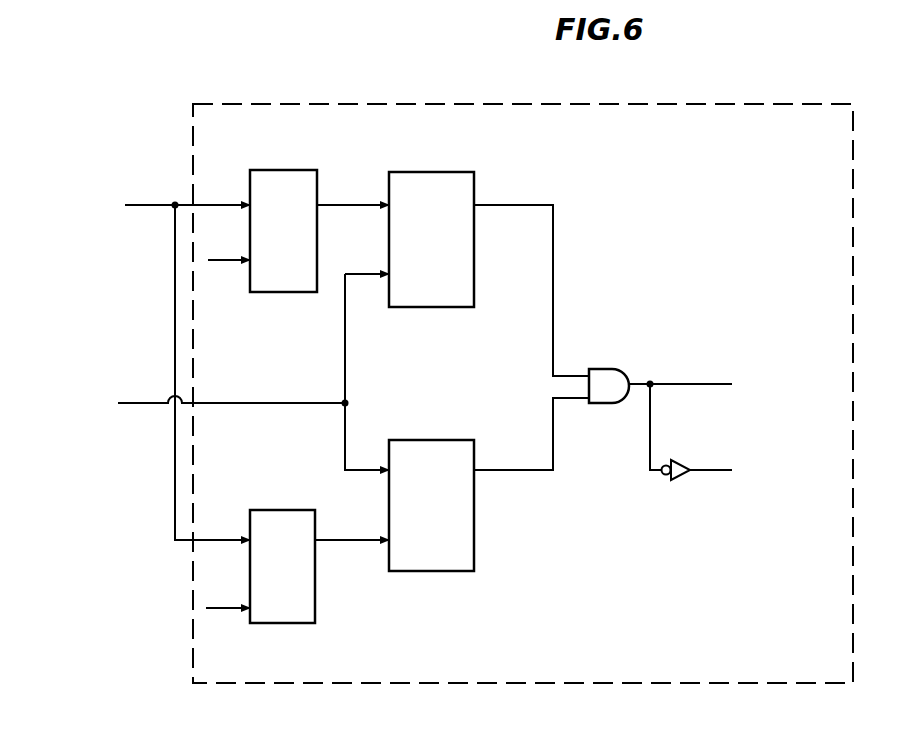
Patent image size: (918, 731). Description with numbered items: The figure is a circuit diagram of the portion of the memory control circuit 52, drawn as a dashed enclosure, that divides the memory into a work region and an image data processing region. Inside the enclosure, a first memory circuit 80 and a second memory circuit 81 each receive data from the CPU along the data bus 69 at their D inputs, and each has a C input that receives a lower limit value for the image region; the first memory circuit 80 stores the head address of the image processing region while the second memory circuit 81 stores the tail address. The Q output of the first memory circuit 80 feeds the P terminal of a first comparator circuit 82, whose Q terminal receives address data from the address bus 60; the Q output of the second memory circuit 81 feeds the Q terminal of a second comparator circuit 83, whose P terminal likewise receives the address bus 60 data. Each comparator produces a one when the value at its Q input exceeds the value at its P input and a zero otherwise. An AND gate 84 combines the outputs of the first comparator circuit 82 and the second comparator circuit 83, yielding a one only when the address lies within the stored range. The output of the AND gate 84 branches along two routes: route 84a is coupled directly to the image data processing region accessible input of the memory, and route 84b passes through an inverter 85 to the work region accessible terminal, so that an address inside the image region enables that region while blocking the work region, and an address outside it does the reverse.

The memory control circuit 52 is at (750, 100).
The data bus 69 is at (150, 205).
The address bus 60 is at (150, 405).
The first memory circuit 80 is at (300, 156).
The second memory circuit 81 is at (290, 625).
The first comparator circuit 82 is at (455, 158).
The second comparator circuit 83 is at (437, 572).
The AND gate 84 is at (600, 404).
The route 84a is at (677, 382).
The route 84b is at (652, 425).
The inverter 85 is at (677, 480).